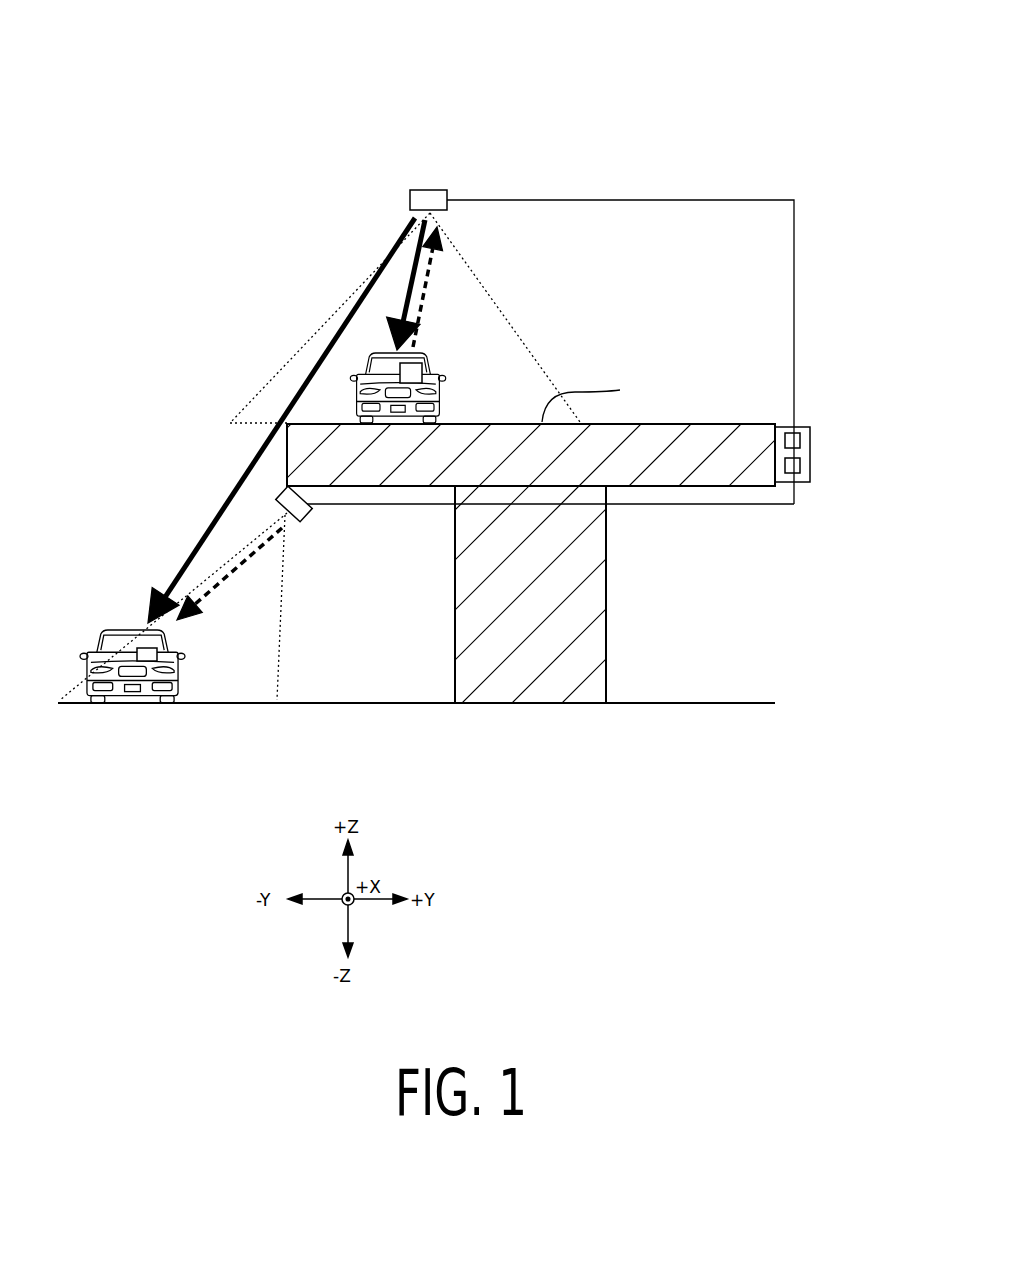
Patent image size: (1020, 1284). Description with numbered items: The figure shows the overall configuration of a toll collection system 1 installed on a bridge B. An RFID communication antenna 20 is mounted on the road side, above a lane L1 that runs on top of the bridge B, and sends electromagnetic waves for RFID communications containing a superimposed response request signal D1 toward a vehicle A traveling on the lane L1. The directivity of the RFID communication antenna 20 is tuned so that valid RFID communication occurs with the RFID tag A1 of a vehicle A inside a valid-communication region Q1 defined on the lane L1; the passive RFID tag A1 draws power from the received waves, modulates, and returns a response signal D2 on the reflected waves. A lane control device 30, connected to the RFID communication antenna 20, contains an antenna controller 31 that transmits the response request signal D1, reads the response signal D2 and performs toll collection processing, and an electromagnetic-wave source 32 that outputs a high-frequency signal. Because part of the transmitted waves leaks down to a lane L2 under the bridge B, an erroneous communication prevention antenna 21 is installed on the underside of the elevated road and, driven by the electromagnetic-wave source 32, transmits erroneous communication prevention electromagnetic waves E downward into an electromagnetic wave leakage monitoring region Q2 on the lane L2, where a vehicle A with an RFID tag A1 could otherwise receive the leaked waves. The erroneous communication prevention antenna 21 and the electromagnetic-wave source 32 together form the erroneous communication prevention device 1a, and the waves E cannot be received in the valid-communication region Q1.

The toll collection system 1 is at (641, 95).
The erroneous communication prevention device 1a is at (708, 526).
The RFID communication antenna 20 is at (429, 197).
The erroneous communication prevention antenna 21 is at (313, 512).
The lane control device 30 is at (810, 445).
The antenna controller 31 is at (800, 438).
The electromagnetic-wave source 32 is at (800, 468).
The vehicle A is at (420, 337).
The RFID tag A1 is at (433, 367).
The bridge B is at (592, 645).
The response request signal D1 is at (423, 272).
The response signal D2 is at (427, 288).
The erroneous communication prevention electromagnetic waves E is at (235, 568).
The lane L1 is at (594, 400).
The lane L2 is at (80, 690).
The valid-communication region Q1 is at (515, 360).
The electromagnetic wave leakage monitoring region Q2 is at (263, 662).